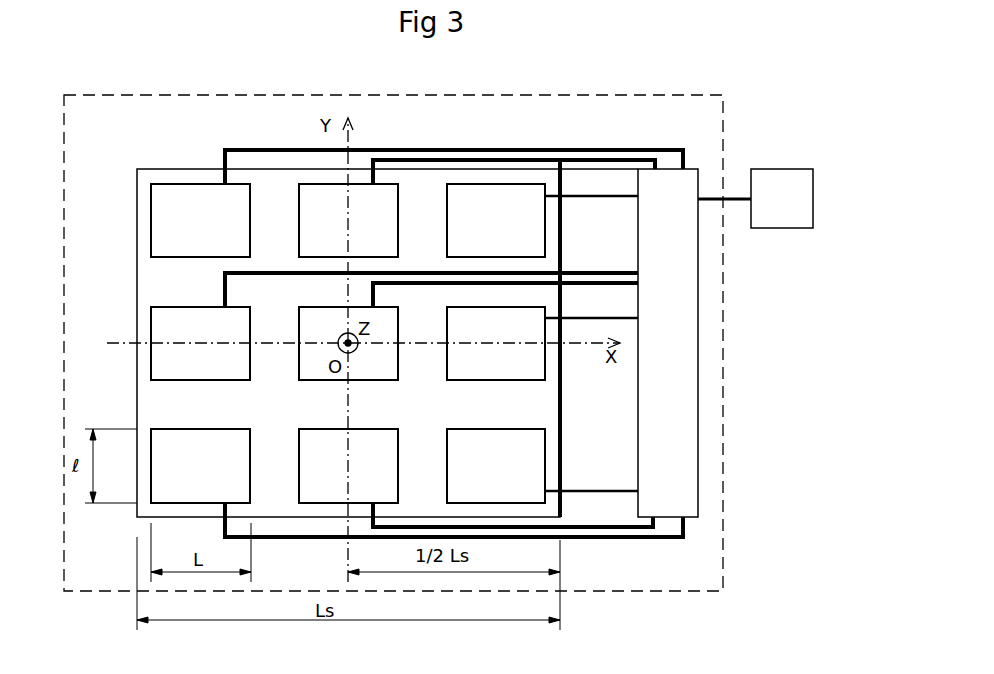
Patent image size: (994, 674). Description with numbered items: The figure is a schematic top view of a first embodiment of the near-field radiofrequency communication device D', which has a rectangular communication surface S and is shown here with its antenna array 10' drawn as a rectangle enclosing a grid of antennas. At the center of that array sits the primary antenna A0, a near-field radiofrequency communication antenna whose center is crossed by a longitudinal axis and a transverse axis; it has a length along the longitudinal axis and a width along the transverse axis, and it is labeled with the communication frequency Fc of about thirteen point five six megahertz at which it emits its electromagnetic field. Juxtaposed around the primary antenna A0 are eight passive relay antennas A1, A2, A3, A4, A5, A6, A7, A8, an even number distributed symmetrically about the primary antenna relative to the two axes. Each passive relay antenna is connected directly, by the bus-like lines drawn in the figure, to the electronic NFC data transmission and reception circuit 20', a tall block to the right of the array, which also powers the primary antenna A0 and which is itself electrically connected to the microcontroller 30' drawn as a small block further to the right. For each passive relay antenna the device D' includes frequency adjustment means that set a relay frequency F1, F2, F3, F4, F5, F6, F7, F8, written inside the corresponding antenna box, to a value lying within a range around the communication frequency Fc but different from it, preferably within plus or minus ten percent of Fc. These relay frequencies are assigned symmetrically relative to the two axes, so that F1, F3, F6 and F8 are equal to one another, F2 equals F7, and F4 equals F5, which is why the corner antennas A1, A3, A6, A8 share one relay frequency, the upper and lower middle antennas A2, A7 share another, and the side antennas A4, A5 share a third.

The antenna array 10' is at (386, 326).
The electronic NFC data transmission and reception circuit 20' is at (713, 343).
The microcontroller 30' is at (772, 170).
The communication surface S is at (535, 160).
The near-field radiofrequency communication device D' is at (428, 343).
The primary antenna A0 is at (328, 339).
The passive relay antenna A1 is at (196, 193).
The passive relay antenna A2 is at (333, 186).
The passive relay antenna A3 is at (480, 186).
The passive relay antenna A4 is at (200, 326).
The passive relay antenna A5 is at (476, 333).
The passive relay antenna A6 is at (200, 448).
The passive relay antenna A7 is at (327, 461).
The passive relay antenna A8 is at (475, 456).
The relay frequency F1 is at (200, 220).
The relay frequency F2 is at (348, 220).
The relay frequency F3 is at (496, 220).
The relay frequency F4 is at (173, 291).
The relay frequency F5 is at (428, 305).
The relay frequency F6 is at (175, 412).
The relay frequency F7 is at (348, 466).
The relay frequency F8 is at (496, 466).
The communication frequency Fc is at (348, 343).